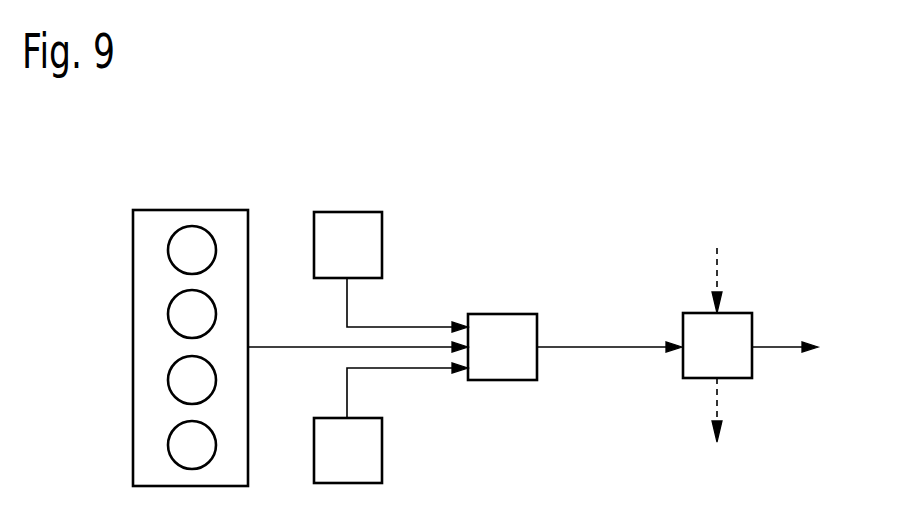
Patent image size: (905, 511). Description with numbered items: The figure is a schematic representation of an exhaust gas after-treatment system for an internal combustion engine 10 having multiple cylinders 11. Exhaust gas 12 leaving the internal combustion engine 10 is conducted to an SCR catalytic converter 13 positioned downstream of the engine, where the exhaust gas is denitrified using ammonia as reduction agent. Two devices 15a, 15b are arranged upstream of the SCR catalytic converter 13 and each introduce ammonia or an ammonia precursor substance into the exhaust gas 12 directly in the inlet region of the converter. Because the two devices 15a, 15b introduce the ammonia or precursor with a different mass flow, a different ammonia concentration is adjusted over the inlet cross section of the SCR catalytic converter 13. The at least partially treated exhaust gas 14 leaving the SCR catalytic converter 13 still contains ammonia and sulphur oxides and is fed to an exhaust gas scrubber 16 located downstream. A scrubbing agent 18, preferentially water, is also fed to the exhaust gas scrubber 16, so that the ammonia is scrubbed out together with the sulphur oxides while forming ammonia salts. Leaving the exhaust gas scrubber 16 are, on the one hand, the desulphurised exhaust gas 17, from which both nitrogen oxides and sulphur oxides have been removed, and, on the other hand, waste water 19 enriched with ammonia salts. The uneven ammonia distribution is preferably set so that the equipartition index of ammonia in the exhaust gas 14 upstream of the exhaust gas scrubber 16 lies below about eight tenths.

The internal combustion engine 10 is at (226, 210).
The cylinders 11 is at (180, 258).
The exhaust gas 12 is at (286, 345).
The SCR catalytic converter 13 is at (505, 370).
The at least partially treated exhaust gas 14 is at (587, 349).
The device for introducing ammonia or ammonia precursor substance 15a is at (368, 245).
The device for introducing ammonia or ammonia precursor substance 15b is at (368, 452).
The exhaust gas scrubber 16 is at (733, 322).
The desulphurised exhaust gas 17 is at (772, 350).
The scrubbing agent 18 is at (712, 262).
The waste water 19 is at (712, 408).